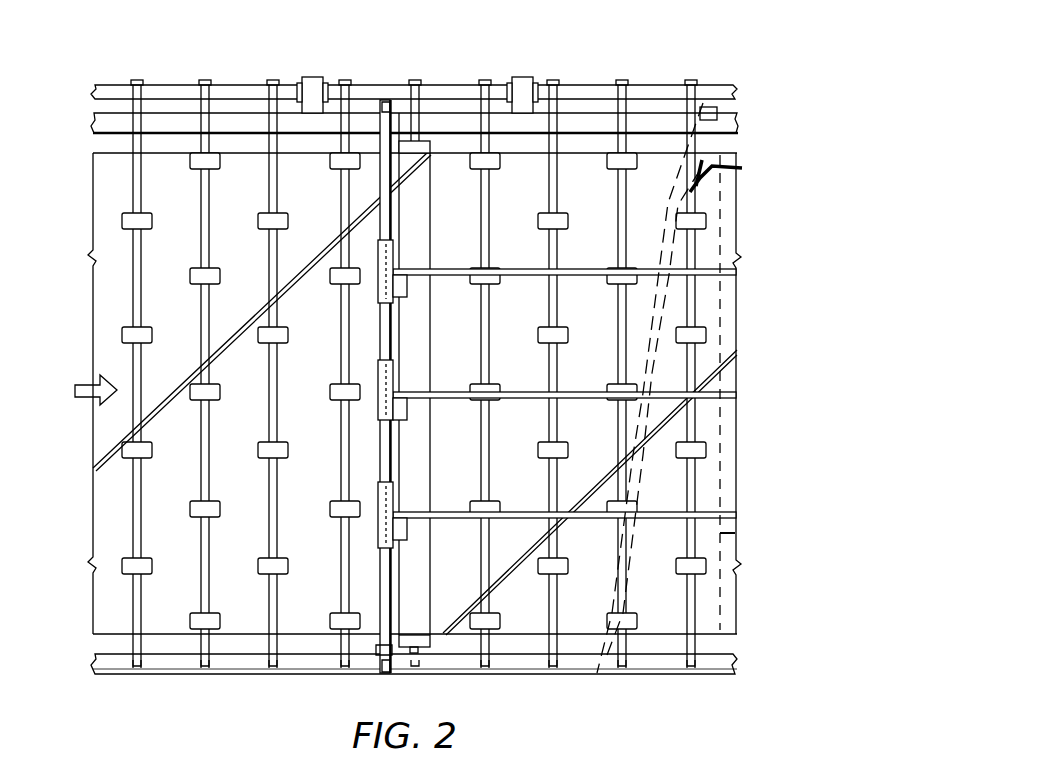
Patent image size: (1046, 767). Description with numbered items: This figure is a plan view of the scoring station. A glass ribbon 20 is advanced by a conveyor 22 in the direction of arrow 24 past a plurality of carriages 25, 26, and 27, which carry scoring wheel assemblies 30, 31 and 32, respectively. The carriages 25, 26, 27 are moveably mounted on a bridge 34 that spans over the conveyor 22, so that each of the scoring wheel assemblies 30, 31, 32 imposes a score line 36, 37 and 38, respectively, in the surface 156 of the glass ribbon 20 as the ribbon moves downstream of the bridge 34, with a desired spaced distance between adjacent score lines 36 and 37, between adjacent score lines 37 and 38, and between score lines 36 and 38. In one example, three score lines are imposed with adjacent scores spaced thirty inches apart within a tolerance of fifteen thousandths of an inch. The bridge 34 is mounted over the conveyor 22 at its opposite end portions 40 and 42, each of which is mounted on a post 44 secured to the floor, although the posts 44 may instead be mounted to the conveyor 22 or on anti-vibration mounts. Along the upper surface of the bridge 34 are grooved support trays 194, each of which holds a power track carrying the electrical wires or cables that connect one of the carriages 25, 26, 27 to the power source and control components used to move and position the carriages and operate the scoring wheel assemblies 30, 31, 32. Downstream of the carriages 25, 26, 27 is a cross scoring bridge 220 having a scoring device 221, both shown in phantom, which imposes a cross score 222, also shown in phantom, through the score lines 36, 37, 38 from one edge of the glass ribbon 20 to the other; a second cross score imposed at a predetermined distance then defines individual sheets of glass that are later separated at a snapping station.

The glass ribbon 20 is at (254, 375).
The conveyor 22 is at (732, 65).
The arrow 24 is at (86, 395).
The carriage 25 is at (420, 494).
The carriage 26 is at (420, 376).
The carriage 27 is at (415, 255).
The scoring wheel assembly 30 is at (422, 540).
The scoring wheel assembly 31 is at (422, 418).
The scoring wheel assembly 32 is at (421, 295).
The bridge 34 is at (366, 188).
The score line 36 is at (518, 513).
The score line 37 is at (522, 392).
The score line 38 is at (520, 270).
The end portion of the bridge 40 is at (388, 138).
The end portion of the bridge 42 is at (373, 645).
The post 44 is at (380, 122).
The surface of the glass ribbon 156 is at (256, 495).
The grooved support tray 194 is at (572, 135).
The cross scoring bridge 220 is at (728, 142).
The scoring device 221 is at (755, 163).
The cross score 222 is at (752, 528).